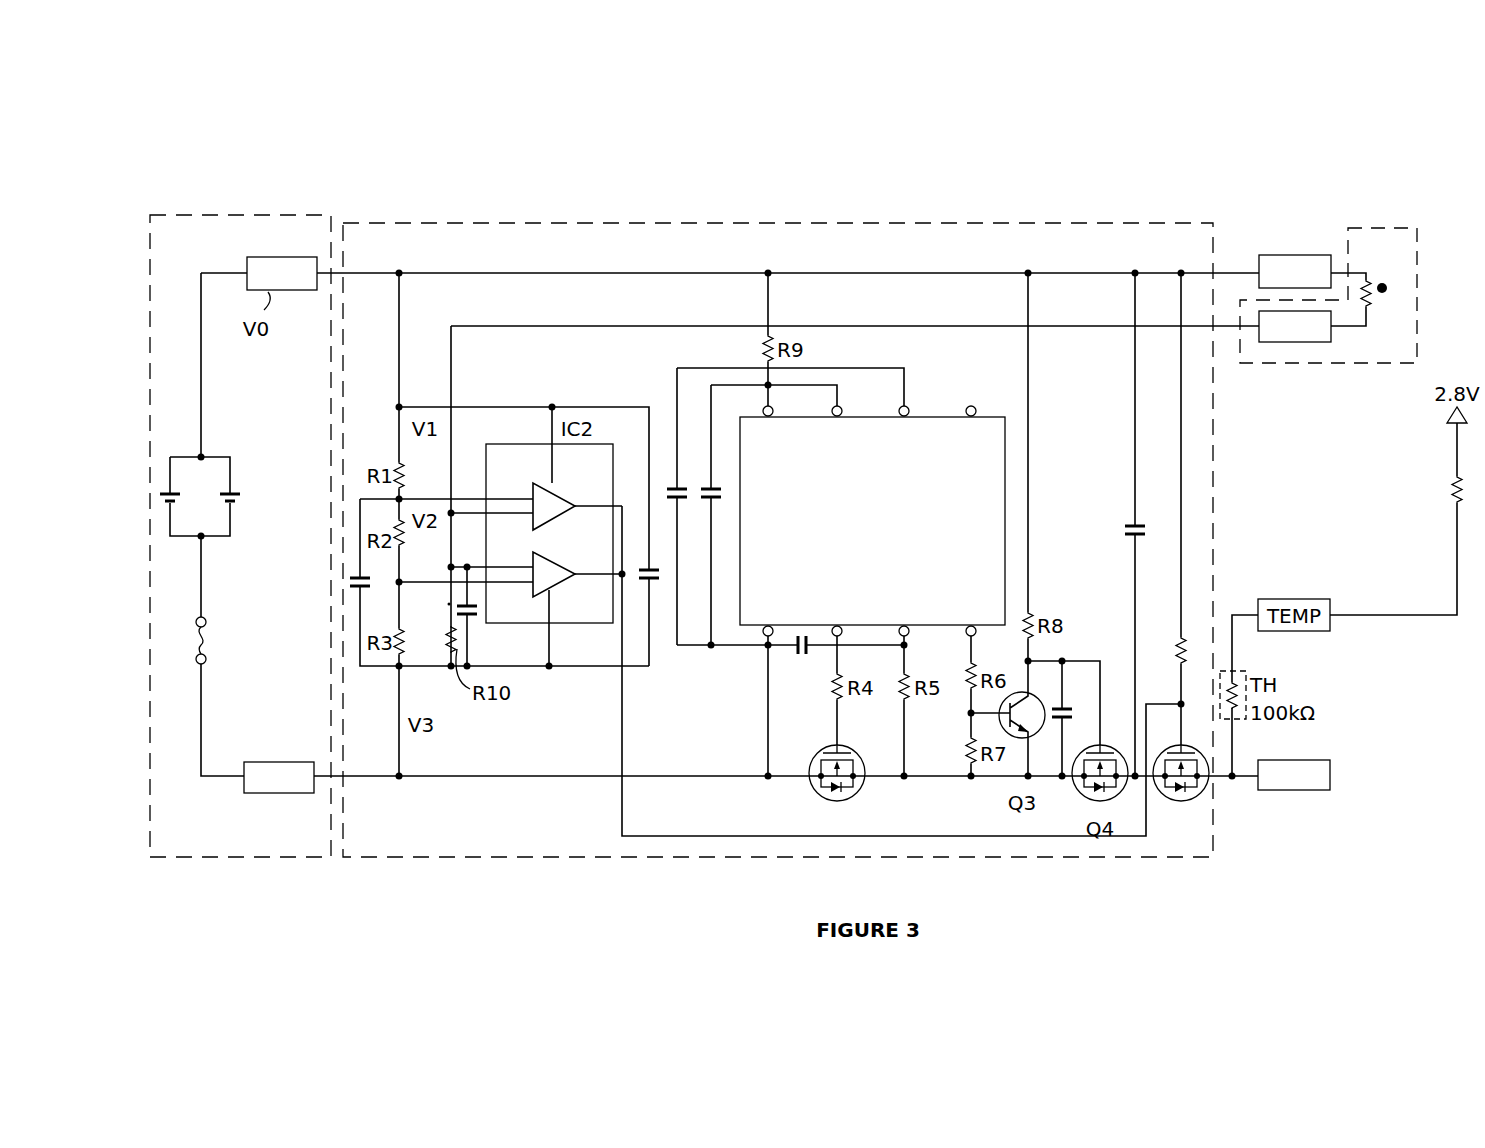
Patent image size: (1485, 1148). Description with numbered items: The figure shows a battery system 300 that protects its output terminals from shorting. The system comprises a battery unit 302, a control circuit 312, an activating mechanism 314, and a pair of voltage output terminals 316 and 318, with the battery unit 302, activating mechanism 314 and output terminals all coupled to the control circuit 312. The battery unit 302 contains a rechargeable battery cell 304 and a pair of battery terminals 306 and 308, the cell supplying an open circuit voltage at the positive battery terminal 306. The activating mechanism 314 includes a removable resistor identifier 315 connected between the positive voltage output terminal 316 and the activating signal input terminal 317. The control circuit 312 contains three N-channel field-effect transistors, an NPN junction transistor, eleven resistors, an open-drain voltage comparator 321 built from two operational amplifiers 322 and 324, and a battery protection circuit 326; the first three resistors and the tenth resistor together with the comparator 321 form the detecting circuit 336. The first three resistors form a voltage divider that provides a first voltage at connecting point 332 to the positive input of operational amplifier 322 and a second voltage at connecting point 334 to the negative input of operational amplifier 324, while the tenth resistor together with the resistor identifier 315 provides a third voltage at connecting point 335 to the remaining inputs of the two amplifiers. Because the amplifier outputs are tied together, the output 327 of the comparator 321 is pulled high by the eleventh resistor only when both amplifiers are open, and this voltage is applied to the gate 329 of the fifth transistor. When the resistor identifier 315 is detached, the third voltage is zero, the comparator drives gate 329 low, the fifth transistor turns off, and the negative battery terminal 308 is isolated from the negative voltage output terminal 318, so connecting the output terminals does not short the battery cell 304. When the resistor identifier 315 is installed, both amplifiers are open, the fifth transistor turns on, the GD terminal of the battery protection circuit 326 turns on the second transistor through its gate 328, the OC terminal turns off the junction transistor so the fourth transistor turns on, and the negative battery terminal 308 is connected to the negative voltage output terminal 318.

The battery system 300 is at (1379, 176).
The battery unit 302 is at (286, 214).
The rechargeable battery cell 304 is at (222, 457).
The battery terminal 306 is at (273, 257).
The negative battery terminal 308 is at (273, 762).
The control circuit 312 is at (1114, 222).
The activating mechanism 314 is at (1417, 273).
The resistor identifier 315 is at (1375, 277).
The positive voltage output terminal 316 is at (1306, 255).
The activating signal input terminal 317 is at (1336, 340).
The negative voltage output terminal 318 is at (1331, 770).
The open-drain type voltage comparator 321 is at (615, 461).
The operational amplifier 322 is at (568, 493).
The operational amplifier 324 is at (562, 561).
The battery protection circuit 326 is at (936, 417).
The output 327 is at (623, 582).
The transistor Q2 gate node 328 is at (837, 706).
The gate 329 is at (1181, 704).
The connecting point 332 is at (399, 499).
The connecting point 334 is at (399, 582).
The connecting point 335 is at (448, 604).
The detecting circuit 336 is at (553, 398).